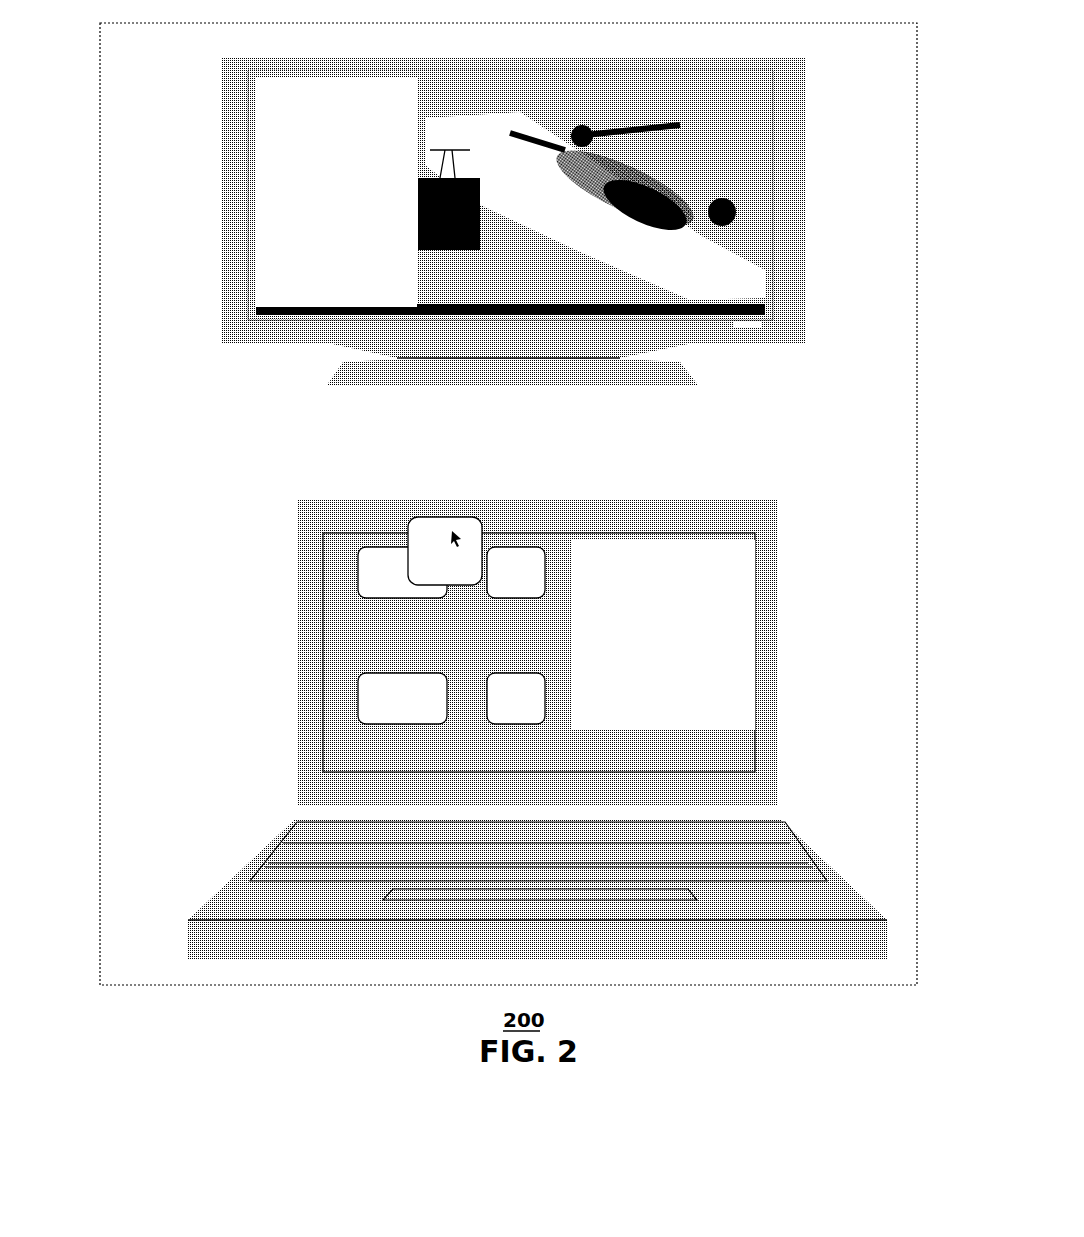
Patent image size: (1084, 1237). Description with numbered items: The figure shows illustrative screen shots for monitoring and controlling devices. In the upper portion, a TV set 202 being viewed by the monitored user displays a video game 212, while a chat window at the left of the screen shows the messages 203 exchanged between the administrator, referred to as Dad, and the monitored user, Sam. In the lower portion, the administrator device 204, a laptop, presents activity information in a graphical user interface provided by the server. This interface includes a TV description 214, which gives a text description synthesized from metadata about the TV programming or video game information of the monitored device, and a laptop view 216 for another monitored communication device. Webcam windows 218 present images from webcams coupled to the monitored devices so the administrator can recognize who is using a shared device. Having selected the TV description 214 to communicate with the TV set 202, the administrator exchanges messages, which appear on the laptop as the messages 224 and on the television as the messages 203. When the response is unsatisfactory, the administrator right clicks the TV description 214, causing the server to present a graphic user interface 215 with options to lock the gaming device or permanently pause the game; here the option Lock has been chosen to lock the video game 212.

The TV set 202 is at (225, 296).
The messages displayed on the TV set 203 is at (256, 103).
The administrator device 204 is at (297, 562).
The video game 212 is at (748, 190).
The TV description 214 is at (367, 577).
The graphic user interface 215 is at (452, 523).
The laptop view 216 is at (370, 703).
The webcam windows 218 is at (527, 698).
The messages displayed on the administrator device 224 is at (745, 676).